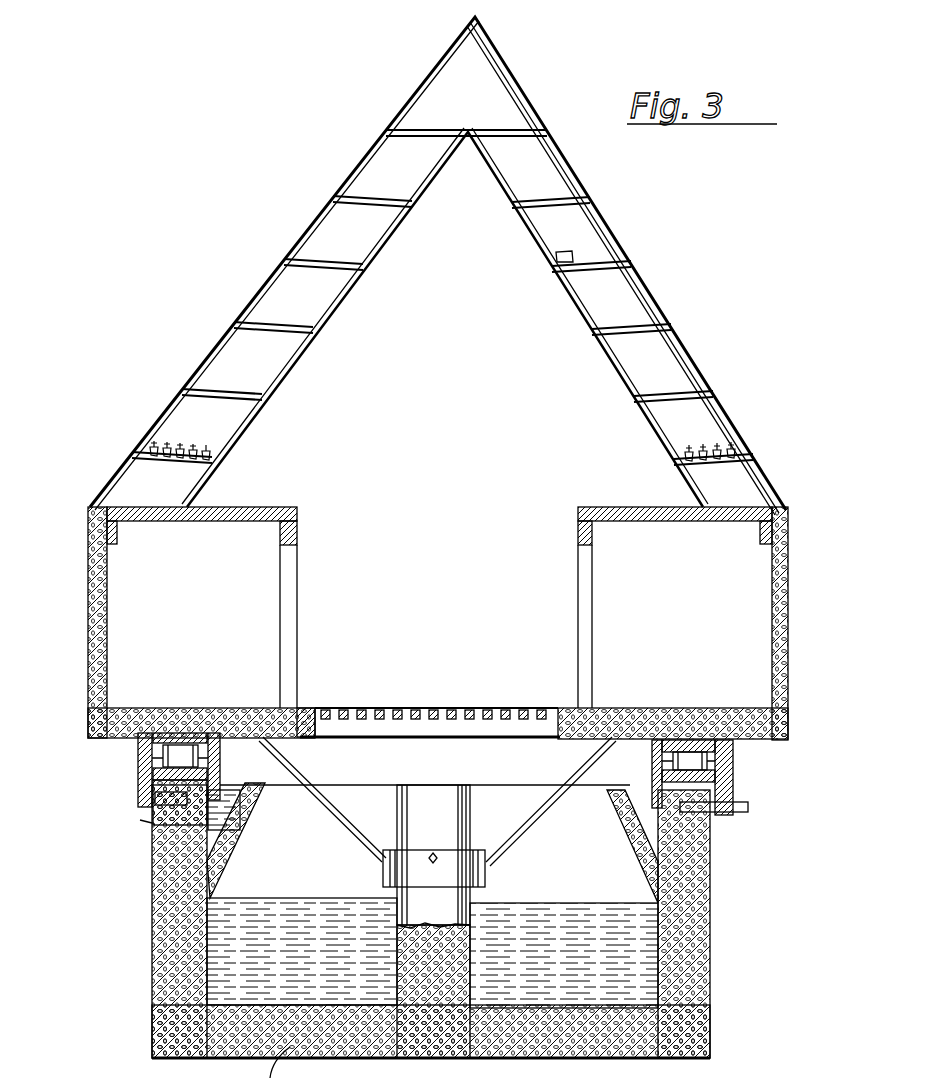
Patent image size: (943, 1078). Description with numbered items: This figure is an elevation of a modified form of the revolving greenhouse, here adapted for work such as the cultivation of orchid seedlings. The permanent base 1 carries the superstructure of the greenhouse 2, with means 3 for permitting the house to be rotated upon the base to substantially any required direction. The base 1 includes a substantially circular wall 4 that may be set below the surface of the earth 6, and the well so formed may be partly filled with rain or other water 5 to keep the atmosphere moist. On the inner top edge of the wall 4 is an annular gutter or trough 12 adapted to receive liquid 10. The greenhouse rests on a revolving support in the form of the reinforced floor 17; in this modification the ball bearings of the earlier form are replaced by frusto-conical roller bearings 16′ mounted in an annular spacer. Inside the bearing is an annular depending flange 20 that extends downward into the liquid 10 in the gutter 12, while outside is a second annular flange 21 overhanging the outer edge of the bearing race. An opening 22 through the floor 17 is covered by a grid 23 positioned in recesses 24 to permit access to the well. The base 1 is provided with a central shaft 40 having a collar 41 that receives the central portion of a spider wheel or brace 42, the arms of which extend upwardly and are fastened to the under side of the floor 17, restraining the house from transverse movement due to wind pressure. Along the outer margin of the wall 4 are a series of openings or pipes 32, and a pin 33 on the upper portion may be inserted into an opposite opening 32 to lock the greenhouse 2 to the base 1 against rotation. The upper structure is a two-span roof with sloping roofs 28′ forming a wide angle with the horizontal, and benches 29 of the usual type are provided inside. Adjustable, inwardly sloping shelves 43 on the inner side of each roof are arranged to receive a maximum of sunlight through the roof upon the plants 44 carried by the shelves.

The permanent base 1 is at (695, 897).
The greenhouse 2 is at (800, 640).
The means for permitting rotation 3 is at (744, 769).
The circular wall 4 is at (155, 953).
The water 5 is at (555, 903).
The earth 6 is at (150, 822).
The liquid 10 is at (232, 787).
The annular gutter or trough 12 is at (257, 803).
The frusto-conical roller bearings 16′ is at (182, 750).
The reinforced floor 17 is at (300, 737).
The annular depending flange 20 is at (652, 773).
The second annular flange 21 is at (140, 797).
The opening 22 is at (337, 740).
The grid 23 is at (472, 708).
The recesses 24 is at (305, 720).
The sloping roofs 28′ is at (310, 231).
The benches 29 is at (272, 507).
The openings or pipes 32 is at (710, 827).
The pin 33 is at (747, 803).
The central shaft 40 is at (470, 813).
The collar 41 is at (420, 877).
The spider wheel or brace 42 is at (352, 826).
The inwardly sloping shelves 43 is at (556, 256).
The plants 44 is at (220, 448).